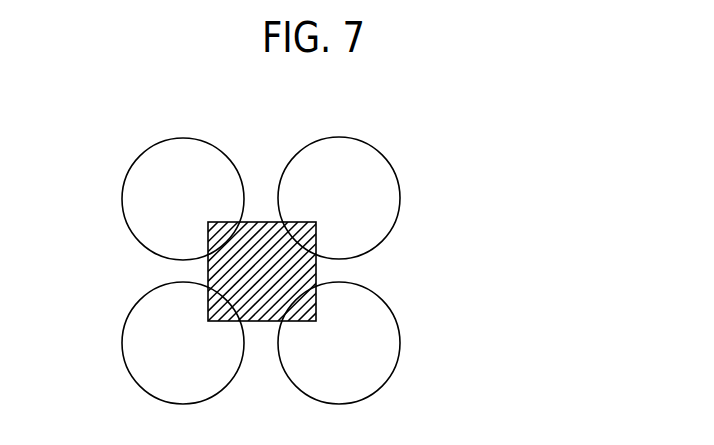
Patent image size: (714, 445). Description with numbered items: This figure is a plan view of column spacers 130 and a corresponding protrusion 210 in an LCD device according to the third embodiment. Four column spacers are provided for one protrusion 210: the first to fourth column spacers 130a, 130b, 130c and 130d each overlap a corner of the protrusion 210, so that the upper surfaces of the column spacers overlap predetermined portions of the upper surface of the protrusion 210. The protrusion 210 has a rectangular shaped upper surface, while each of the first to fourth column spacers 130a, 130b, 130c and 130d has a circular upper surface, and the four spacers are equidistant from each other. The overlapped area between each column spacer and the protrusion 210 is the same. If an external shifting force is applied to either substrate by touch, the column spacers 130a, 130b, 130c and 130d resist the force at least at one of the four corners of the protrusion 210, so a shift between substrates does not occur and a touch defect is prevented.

The column spacers 130 is at (382, 270).
The first column spacer 130a is at (188, 153).
The second column spacer 130b is at (377, 202).
The third column spacer 130c is at (378, 319).
The fourth column spacer 130d is at (210, 384).
The protrusion 210 is at (218, 272).